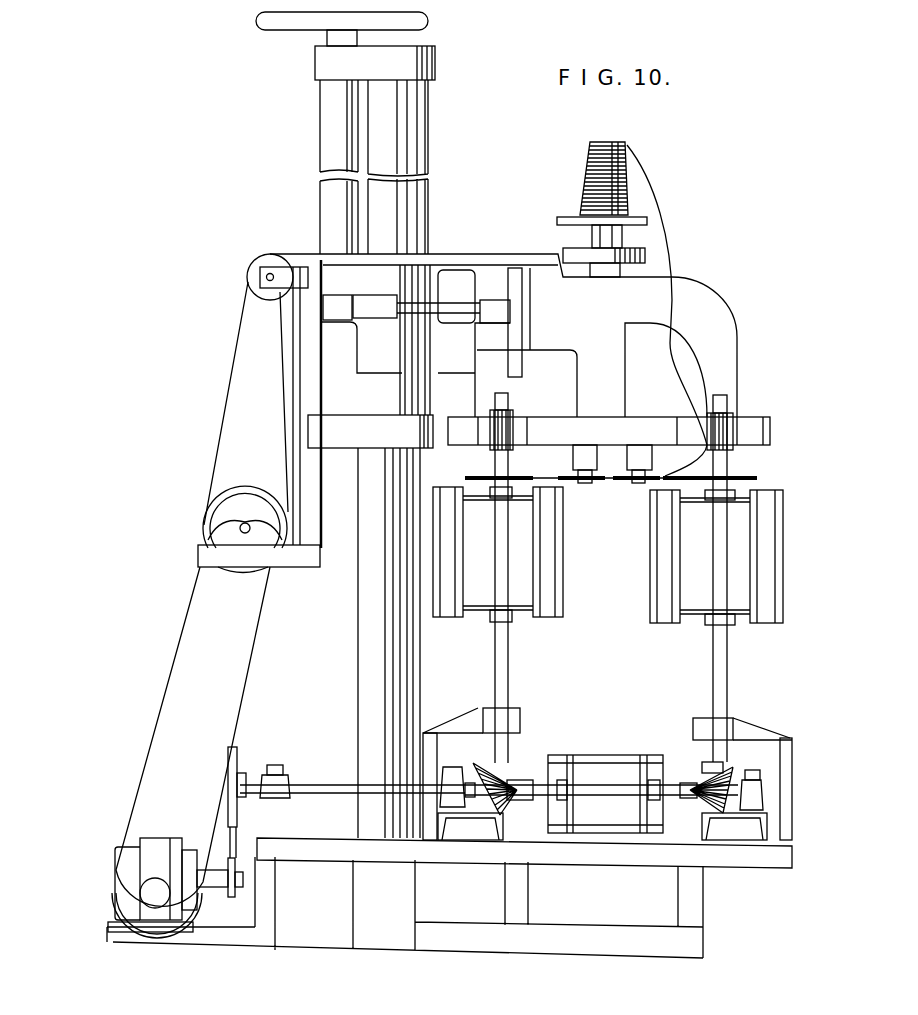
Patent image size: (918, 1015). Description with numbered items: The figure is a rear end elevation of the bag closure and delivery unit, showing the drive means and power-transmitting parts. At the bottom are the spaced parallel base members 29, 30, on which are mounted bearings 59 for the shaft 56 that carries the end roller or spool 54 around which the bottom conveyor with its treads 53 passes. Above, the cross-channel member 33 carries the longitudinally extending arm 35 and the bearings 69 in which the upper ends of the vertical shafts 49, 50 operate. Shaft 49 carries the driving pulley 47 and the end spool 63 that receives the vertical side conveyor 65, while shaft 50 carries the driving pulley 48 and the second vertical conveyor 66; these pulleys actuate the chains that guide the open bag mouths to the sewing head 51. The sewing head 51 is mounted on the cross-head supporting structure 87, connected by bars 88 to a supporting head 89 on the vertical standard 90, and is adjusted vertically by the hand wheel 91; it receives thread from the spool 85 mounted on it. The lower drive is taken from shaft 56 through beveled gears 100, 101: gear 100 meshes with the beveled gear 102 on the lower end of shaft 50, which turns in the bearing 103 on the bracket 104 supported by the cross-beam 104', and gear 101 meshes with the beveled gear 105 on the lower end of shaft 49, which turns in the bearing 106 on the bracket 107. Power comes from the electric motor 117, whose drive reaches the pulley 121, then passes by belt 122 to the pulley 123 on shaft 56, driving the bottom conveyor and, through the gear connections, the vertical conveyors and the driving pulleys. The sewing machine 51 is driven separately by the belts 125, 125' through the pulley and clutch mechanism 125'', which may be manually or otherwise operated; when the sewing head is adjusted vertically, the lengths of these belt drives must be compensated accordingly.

The hand wheel 91 is at (428, 21).
The vertical standard 90 is at (377, 637).
The sewing head 51 is at (706, 315).
The spool 85 is at (627, 175).
The supporting head 89 is at (433, 273).
The bar 88 is at (452, 305).
The cross-head supporting structure 87 is at (513, 310).
The longitudinally extending arm 35 is at (490, 385).
The cross-channel member 33 is at (658, 437).
The bearing 69 is at (735, 425).
The driving pulley 48 is at (512, 477).
The driving pulley 47 is at (757, 480).
The second vertical conveyor 66 is at (550, 570).
The vertical side conveyor 65 is at (775, 532).
The end roller or spool 63 is at (683, 612).
The vertical shaft 50 is at (498, 672).
The vertical shaft 49 is at (722, 683).
The bracket 104 is at (453, 764).
The bearing 103 is at (505, 717).
The bearing 106 is at (697, 730).
The bracket 107 is at (765, 732).
The beveled gear 102 is at (505, 763).
The beveled gear 101 is at (687, 813).
The beveled gear 100 is at (507, 808).
The base member 29 is at (740, 818).
The conveyor tread 53 is at (622, 755).
The end roller or spool 54 is at (573, 779).
The beveled gear 105 is at (703, 762).
The bearing 59 is at (753, 772).
The cross-beam 104' is at (405, 907).
The base member 30 is at (318, 808).
The shaft 56 is at (322, 785).
The pulley 123 is at (237, 752).
The belt 122 is at (233, 847).
The pulley 121 is at (235, 893).
The electric motor 117 is at (175, 910).
The belt 125 is at (185, 736).
The belt 125' is at (243, 389).
The pulley and clutch mechanism 125'' is at (236, 417).